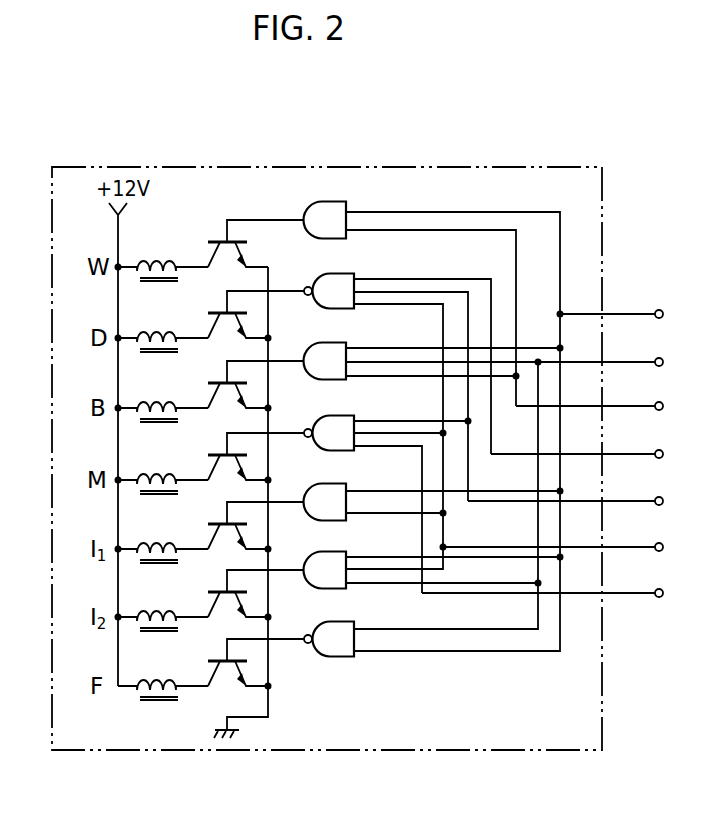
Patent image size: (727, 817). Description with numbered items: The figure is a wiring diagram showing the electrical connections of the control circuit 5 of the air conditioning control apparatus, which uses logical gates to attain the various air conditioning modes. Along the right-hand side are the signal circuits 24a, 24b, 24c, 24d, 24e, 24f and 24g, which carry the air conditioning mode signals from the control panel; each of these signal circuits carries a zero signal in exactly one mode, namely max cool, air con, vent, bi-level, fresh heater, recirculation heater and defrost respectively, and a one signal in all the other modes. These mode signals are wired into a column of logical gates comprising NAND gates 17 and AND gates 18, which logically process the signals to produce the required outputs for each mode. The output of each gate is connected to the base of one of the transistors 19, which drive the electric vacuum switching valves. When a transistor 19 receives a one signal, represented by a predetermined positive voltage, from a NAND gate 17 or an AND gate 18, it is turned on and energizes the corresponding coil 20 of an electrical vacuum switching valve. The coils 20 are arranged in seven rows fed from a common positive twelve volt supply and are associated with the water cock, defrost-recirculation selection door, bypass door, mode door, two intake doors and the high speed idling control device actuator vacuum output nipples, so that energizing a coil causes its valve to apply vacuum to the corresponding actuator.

The control circuit 5 is at (434, 167).
The NAND gates 17 is at (338, 273).
The AND gates 18 is at (343, 201).
The transistors 19 is at (219, 240).
The coils 20 is at (166, 331).
The signal circuit 24a is at (640, 312).
The signal circuit 24b is at (640, 360).
The signal circuit 24c is at (640, 404).
The signal circuit 24d is at (640, 452).
The signal circuit 24e is at (640, 499).
The signal circuit 24f is at (640, 545).
The signal circuit 24g is at (640, 591).